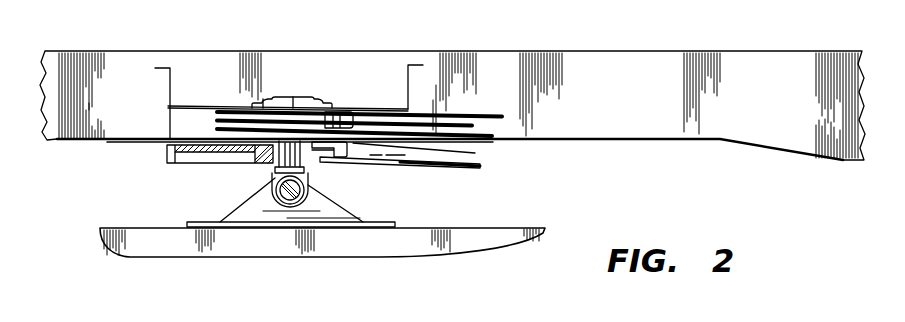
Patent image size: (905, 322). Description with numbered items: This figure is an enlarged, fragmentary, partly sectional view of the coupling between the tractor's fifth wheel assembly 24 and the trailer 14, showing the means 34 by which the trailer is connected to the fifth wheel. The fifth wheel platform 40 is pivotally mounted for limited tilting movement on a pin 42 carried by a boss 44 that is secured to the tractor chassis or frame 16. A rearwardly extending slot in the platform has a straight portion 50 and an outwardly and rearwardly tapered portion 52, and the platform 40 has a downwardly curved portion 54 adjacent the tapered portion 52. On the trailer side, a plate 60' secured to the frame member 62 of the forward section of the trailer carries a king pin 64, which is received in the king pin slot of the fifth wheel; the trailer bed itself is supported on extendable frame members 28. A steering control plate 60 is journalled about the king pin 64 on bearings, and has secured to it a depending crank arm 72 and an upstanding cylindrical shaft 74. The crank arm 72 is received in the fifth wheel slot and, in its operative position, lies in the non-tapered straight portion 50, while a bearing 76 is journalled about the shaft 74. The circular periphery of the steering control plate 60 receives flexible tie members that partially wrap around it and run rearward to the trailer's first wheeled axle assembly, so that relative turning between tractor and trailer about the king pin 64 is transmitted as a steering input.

The trailer 14 is at (741, 46).
The chassis or frame 16 is at (472, 243).
The fifth wheel assembly 24 is at (462, 169).
The extendable frame members 28 is at (790, 80).
The means for connecting the trailer to the fifth wheel 34 is at (308, 92).
The fifth wheel platform 40 is at (192, 160).
The pin 42 is at (284, 207).
The boss 44 is at (335, 210).
The straight portion 50 is at (320, 160).
The tapered portion 52 is at (415, 155).
The downwardly curved portion 54 is at (463, 157).
The steering control plate 60 is at (335, 104).
The plate 60' is at (157, 123).
The frame member 62 is at (390, 108).
The king pin 64 is at (283, 163).
The crank arm 72 is at (343, 117).
The cylindrical shaft 74 is at (293, 99).
The bearing 76 is at (262, 98).